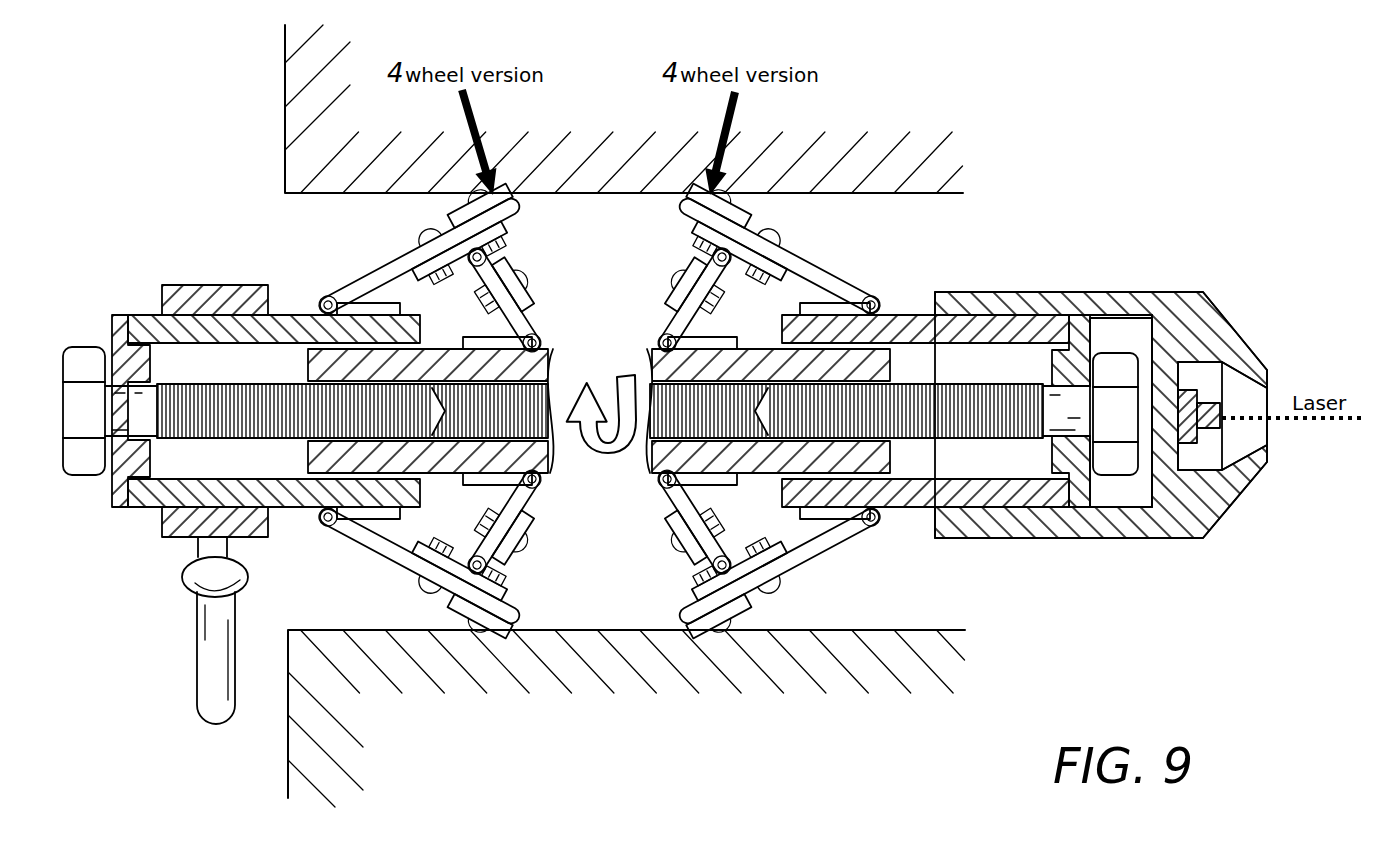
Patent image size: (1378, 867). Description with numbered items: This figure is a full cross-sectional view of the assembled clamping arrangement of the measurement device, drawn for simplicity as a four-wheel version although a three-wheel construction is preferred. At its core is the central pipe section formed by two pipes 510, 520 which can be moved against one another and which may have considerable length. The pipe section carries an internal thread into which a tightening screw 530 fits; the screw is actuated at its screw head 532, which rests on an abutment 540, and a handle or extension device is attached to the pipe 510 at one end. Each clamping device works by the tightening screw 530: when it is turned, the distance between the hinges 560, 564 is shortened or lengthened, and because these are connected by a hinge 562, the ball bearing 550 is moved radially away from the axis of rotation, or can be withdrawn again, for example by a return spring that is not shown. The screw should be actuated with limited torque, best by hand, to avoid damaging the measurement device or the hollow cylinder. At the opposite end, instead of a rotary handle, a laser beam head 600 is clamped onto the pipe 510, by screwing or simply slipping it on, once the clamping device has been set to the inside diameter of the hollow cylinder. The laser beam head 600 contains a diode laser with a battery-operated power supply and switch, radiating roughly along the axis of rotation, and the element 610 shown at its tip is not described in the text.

The pipe 510 is at (290, 510).
The pipe 520 is at (556, 478).
The tightening screw 530 is at (281, 392).
The screw head 532 is at (80, 358).
The abutment 540 is at (122, 318).
The ball bearing 550 is at (513, 208).
The hinge 560 is at (353, 290).
The hinge 562 is at (428, 282).
The hinge 564 is at (523, 313).
The laser beam head 600 is at (1028, 291).
The laser target 610 is at (1210, 403).